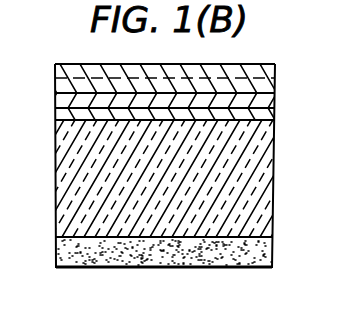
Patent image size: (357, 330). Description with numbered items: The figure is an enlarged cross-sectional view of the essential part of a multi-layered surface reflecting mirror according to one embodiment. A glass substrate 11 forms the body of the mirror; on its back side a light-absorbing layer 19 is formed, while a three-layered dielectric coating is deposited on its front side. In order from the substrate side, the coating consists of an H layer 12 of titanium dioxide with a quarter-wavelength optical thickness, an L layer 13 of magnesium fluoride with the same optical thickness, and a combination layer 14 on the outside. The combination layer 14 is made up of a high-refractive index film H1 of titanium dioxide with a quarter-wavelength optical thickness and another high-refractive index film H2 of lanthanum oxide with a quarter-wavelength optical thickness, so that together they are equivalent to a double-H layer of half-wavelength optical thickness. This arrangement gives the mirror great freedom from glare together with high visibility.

The glass substrate 11 is at (262, 185).
The H layer 12 is at (276, 116).
The L layer 13 is at (268, 106).
The H1+H2 combination layer 14 is at (275, 80).
The light-absorbing layer 19 is at (260, 255).
The high-refractive index film H1 is at (57, 86).
The high-refractive index film H2 is at (57, 70).